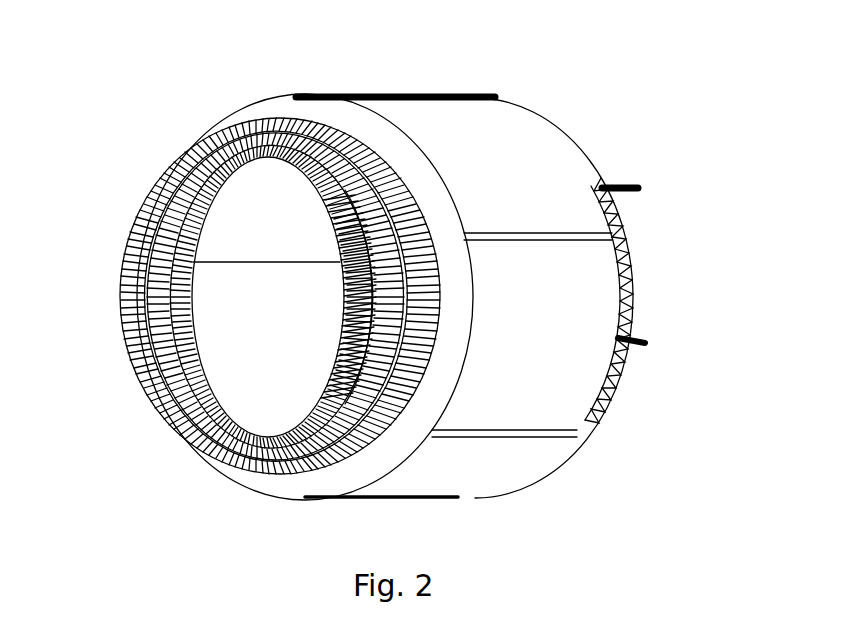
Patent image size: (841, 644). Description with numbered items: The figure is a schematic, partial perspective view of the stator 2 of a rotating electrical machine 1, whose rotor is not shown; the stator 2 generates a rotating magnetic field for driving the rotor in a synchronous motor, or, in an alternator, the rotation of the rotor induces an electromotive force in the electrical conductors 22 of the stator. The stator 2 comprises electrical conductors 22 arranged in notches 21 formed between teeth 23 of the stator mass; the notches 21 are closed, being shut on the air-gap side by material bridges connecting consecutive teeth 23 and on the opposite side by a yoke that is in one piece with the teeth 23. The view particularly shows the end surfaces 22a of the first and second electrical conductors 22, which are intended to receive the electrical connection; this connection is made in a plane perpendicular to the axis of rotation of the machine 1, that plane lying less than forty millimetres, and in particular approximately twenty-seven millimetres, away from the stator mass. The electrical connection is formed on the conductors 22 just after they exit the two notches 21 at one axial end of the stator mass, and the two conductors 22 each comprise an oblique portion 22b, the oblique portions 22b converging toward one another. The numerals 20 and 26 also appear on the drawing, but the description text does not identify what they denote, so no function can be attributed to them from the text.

The rotating electrical machine 1 is at (597, 142).
The stator 2 is at (421, 92).
The yoke of stator core 20 is at (283, 103).
The notches 21 is at (338, 120).
The teeth 23 is at (377, 140).
The electrical conductors 22 is at (370, 296).
The end surfaces 22a is at (213, 127).
The oblique portion 22b is at (135, 266).
The housing 26 is at (413, 498).